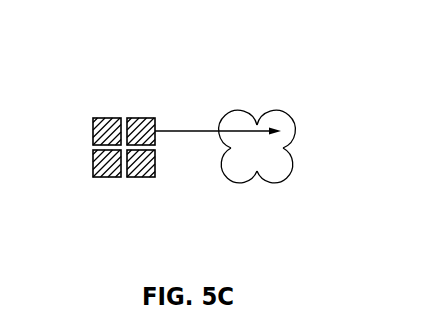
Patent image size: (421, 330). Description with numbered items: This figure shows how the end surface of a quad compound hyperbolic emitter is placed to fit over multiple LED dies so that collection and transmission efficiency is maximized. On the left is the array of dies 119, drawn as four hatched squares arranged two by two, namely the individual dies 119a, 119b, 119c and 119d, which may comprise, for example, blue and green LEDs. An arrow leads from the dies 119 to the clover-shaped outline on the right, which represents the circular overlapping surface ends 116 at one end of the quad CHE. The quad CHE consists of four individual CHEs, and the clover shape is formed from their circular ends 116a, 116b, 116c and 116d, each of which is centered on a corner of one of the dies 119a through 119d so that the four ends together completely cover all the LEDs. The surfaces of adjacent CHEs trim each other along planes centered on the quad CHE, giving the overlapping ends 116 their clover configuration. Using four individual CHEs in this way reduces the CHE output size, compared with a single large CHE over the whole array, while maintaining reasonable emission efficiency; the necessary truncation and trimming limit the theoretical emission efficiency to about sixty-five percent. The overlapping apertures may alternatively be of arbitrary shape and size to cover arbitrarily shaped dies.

The circular overlapping surface ends 116 is at (287, 69).
The end of first individual CHE 116a is at (234, 183).
The end of second individual CHE 116b is at (242, 112).
The end of third individual CHE 116c is at (277, 112).
The end of fourth individual CHE 116d is at (274, 182).
The dies 119 is at (72, 136).
The first die 119a is at (105, 177).
The second die 119b is at (110, 118).
The third die 119c is at (143, 118).
The fourth die 119d is at (142, 177).